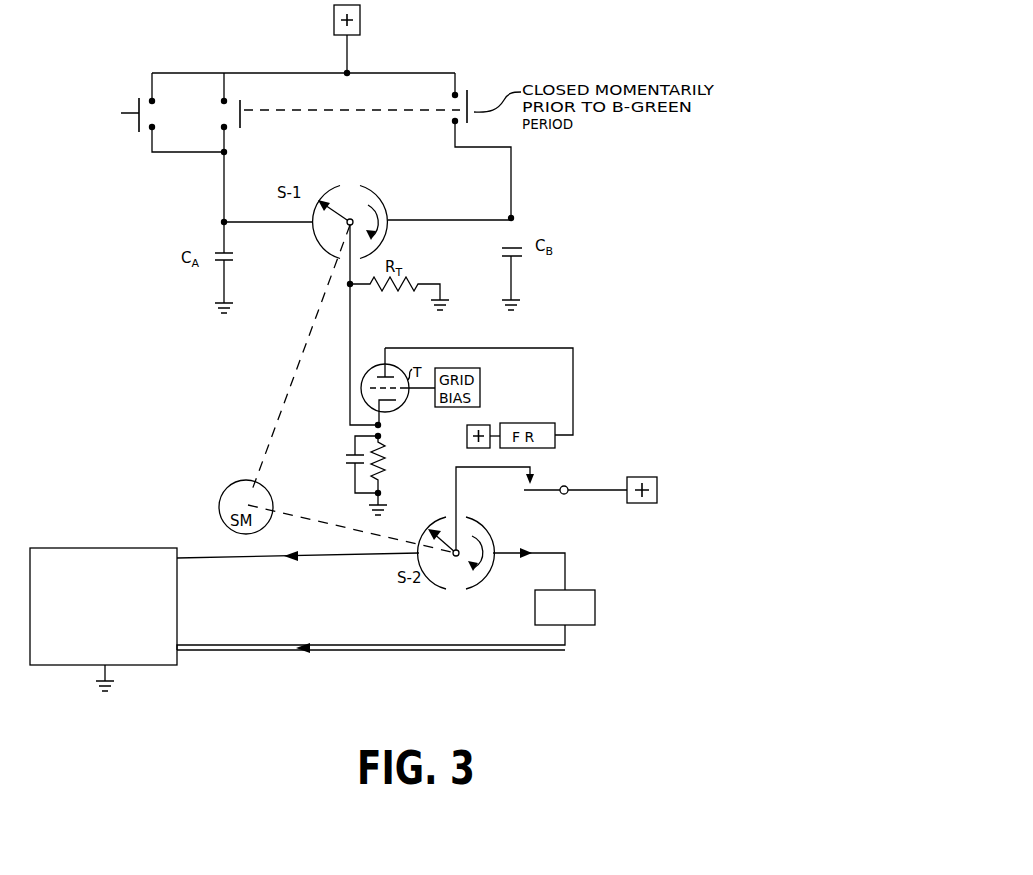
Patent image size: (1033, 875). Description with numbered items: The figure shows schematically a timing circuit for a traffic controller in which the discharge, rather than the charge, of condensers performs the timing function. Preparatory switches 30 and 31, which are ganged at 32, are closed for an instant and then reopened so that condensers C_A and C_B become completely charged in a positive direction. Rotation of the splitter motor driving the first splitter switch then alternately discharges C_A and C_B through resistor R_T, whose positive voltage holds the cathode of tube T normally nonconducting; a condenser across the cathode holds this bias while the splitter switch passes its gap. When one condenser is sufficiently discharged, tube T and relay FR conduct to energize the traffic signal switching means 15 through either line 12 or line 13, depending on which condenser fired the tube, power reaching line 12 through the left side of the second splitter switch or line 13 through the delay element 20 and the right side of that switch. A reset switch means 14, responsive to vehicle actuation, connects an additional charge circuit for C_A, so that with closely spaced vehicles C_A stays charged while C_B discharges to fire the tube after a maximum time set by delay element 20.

The reset switch means 14 is at (146, 139).
The preparatory switch 30 is at (228, 100).
The preparatory switch 31 is at (460, 97).
The ganging of preparatory switches 32 is at (346, 116).
The traffic signal switching means 15 is at (86, 548).
The line 12 is at (298, 550).
The line 13 is at (371, 648).
The delay element 20 is at (597, 604).